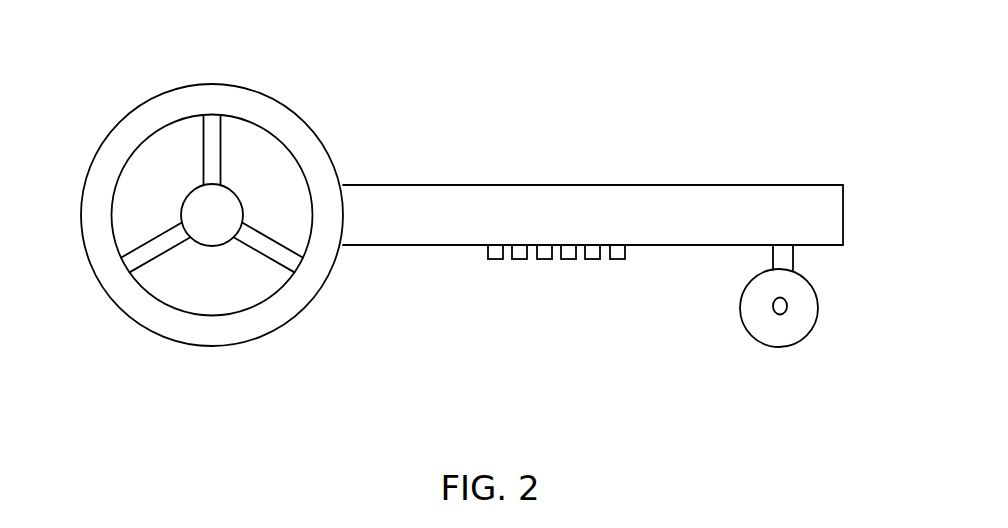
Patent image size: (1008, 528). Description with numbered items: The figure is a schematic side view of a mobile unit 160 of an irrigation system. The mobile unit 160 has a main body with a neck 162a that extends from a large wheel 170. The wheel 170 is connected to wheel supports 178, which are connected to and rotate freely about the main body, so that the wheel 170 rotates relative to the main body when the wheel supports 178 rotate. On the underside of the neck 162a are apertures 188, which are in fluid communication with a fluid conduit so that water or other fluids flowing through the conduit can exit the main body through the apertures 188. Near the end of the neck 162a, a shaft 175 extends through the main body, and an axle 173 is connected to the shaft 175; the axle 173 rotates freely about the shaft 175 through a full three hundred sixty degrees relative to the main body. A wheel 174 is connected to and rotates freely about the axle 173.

The mobile unit 160 is at (545, 59).
The wheel 170 is at (143, 118).
The wheel supports 178 is at (210, 150).
The neck 162a is at (623, 202).
The apertures 188 is at (495, 259).
The shaft 175 is at (787, 253).
The wheel 174 is at (807, 315).
The axle 173 is at (772, 310).